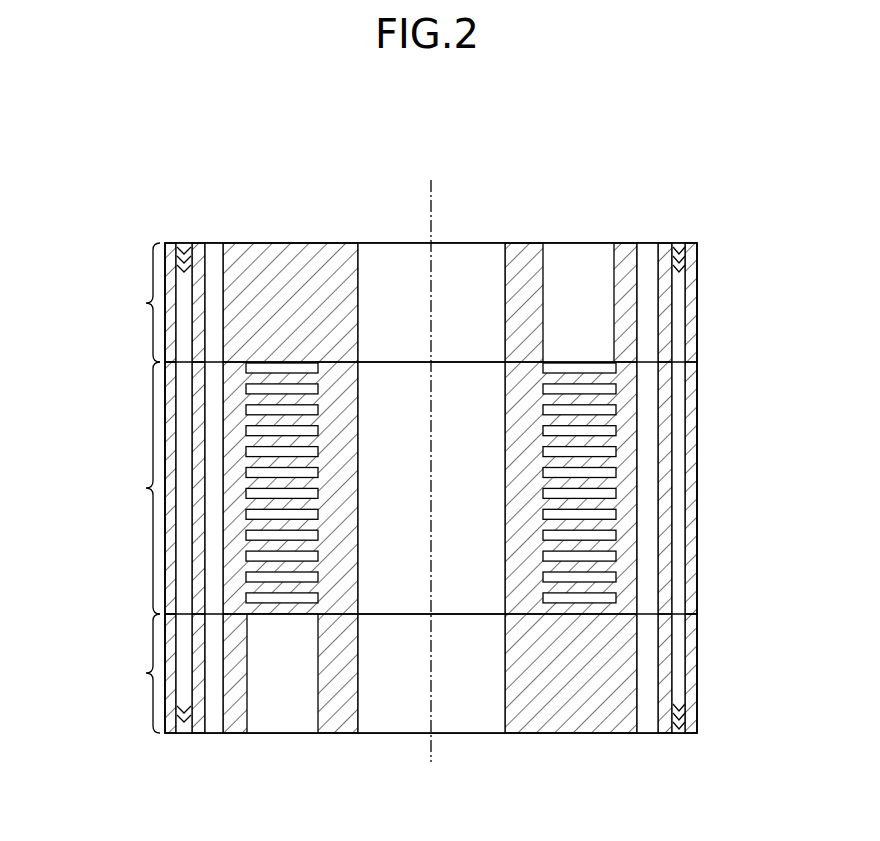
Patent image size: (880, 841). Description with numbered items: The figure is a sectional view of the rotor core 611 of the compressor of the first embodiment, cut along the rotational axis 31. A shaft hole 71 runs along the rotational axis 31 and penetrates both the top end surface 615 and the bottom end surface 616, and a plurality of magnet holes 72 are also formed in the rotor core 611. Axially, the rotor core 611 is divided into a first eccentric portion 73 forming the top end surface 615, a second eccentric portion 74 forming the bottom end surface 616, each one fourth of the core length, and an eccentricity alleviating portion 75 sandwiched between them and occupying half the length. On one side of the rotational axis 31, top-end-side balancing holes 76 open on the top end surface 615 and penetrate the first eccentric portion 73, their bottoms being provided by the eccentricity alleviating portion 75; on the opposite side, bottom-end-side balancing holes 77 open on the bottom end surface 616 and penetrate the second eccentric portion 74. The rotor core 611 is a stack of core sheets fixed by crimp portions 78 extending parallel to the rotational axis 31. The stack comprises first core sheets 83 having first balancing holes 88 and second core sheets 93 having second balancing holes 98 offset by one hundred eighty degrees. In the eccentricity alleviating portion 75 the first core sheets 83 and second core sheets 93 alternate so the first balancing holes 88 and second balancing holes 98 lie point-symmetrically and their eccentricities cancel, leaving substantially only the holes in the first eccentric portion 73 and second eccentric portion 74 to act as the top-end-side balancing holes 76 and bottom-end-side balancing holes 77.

The rotor core 611 is at (633, 163).
The rotational axis 31 is at (431, 243).
The magnet holes 72 is at (212, 255).
The top end surface 615 is at (288, 250).
The shaft hole 71 is at (465, 260).
The top-end-side balancing holes 76 is at (577, 248).
The first balancing holes 88 is at (530, 606).
The first eccentric portion 73 is at (125, 302).
The first core sheets 83 is at (386, 428).
The eccentricity alleviating portion 75 is at (105, 488).
The second core sheets 93 is at (406, 605).
The second eccentric portion 74 is at (125, 673).
The crimp portions 78 is at (183, 735).
The second balancing holes 98 is at (240, 606).
The bottom-end-side balancing holes 77 is at (283, 735).
The bottom end surface 616 is at (569, 734).